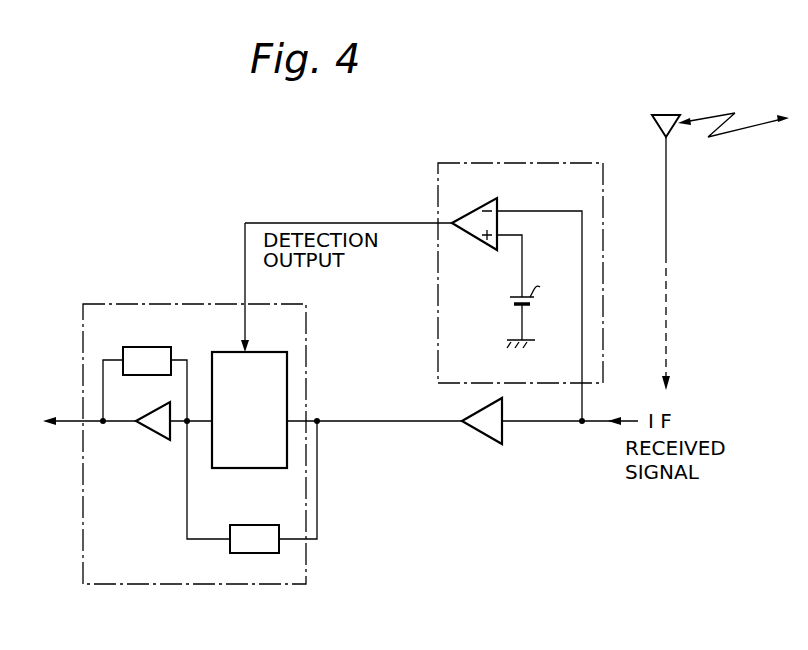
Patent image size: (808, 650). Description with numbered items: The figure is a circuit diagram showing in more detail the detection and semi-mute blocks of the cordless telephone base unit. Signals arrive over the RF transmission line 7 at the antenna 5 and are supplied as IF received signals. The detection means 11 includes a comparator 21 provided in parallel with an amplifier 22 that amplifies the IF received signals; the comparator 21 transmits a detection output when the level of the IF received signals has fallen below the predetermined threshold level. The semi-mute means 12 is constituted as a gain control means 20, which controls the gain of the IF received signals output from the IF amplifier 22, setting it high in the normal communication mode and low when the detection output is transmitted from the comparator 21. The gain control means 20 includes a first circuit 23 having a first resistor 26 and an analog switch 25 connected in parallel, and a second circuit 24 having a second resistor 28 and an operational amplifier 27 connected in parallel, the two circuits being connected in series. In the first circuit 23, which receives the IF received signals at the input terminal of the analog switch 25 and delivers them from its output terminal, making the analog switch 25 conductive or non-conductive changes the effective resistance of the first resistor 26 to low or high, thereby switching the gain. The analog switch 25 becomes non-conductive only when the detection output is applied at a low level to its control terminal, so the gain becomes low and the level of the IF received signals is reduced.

The antenna 5 is at (662, 113).
The RF transmission line 7 is at (741, 130).
The detection means 11 is at (422, 266).
The semi-mute means 12 is at (200, 433).
The gain control means 20 is at (166, 546).
The comparator 21 is at (463, 212).
The amplifier 22 is at (490, 444).
The first circuit 23 is at (236, 508).
The second circuit 24 is at (113, 403).
The analog switch 25 is at (246, 390).
The first resistor 26 is at (257, 553).
The operational amplifier 27 is at (141, 428).
The resistor R2 28 is at (130, 347).